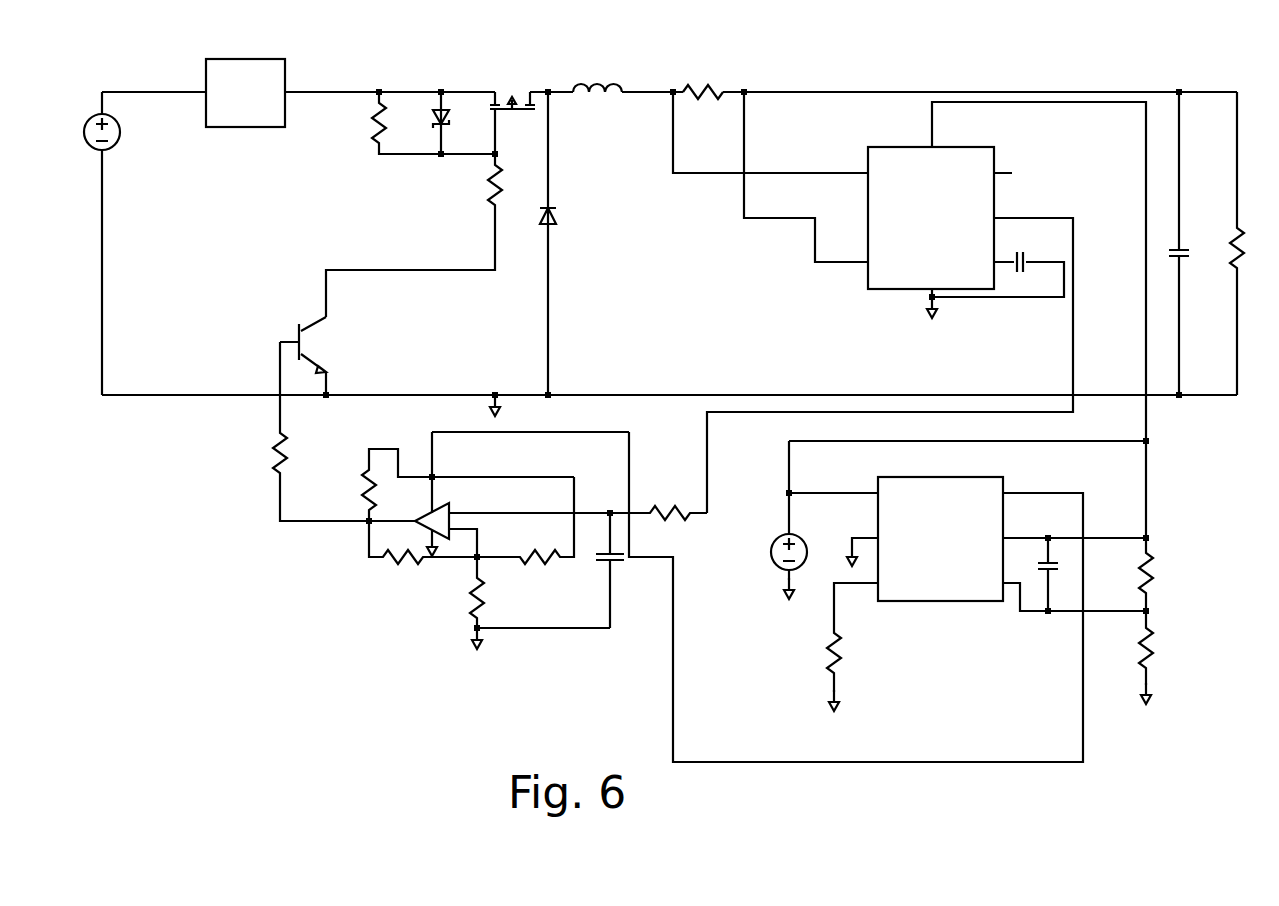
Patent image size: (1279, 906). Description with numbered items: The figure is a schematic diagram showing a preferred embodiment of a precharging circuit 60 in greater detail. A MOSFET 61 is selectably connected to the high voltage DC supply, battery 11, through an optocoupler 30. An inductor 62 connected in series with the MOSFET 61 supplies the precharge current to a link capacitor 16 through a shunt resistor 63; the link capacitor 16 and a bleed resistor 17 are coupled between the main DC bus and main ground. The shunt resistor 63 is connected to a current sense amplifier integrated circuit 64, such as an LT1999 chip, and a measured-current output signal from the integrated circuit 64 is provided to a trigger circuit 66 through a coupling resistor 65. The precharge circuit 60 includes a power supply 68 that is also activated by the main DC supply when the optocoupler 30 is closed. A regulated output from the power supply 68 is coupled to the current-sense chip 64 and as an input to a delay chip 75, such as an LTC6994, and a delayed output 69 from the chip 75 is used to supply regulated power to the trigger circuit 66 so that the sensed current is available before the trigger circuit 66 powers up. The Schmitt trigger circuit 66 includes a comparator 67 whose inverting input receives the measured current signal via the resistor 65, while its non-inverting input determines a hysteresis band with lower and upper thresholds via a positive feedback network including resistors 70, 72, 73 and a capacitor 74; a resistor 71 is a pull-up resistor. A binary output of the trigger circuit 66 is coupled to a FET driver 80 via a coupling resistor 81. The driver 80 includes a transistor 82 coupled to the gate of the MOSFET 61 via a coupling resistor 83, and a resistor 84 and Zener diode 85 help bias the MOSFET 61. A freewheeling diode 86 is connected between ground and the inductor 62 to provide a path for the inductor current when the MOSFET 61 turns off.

The battery 11 is at (120, 132).
The optocoupler 30 is at (236, 127).
The precharging circuit 60 is at (660, 214).
The MOSFET 61 is at (520, 90).
The inductor 62 is at (597, 84).
The shunt resistor 63 is at (700, 90).
The current sense amplifier integrated circuit 64 is at (900, 146).
The coupling resistor 65 is at (662, 505).
The trigger circuit 66 is at (697, 597).
The comparator 67 is at (452, 512).
The power supply 68 is at (770, 552).
The delayed output 69 is at (1085, 512).
The resistor 70 is at (385, 558).
The pull-up resistor 71 is at (366, 496).
The resistor 72 is at (540, 550).
The resistor 73 is at (487, 598).
The capacitor 74 is at (620, 566).
The delay chip 75 is at (942, 602).
The FET driver 80 is at (353, 287).
The coupling resistor 81 is at (276, 460).
The transistor 82 is at (296, 333).
The coupling resistor 83 is at (492, 193).
The resistor 84 is at (374, 130).
The Zener diode 85 is at (441, 116).
The freewheeling diode 86 is at (556, 214).
The link capacitor 16 is at (1176, 248).
The bleed resistor 17 is at (1234, 235).